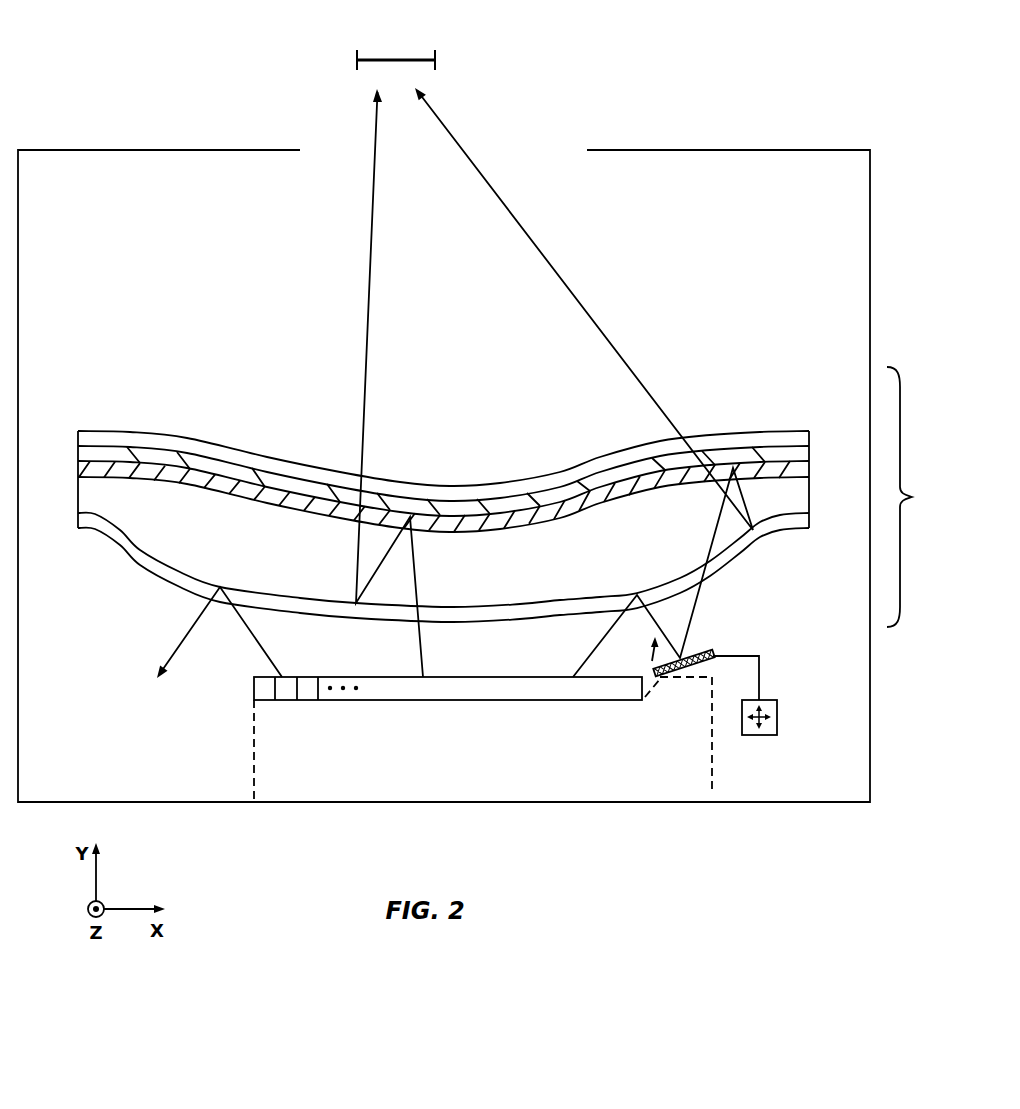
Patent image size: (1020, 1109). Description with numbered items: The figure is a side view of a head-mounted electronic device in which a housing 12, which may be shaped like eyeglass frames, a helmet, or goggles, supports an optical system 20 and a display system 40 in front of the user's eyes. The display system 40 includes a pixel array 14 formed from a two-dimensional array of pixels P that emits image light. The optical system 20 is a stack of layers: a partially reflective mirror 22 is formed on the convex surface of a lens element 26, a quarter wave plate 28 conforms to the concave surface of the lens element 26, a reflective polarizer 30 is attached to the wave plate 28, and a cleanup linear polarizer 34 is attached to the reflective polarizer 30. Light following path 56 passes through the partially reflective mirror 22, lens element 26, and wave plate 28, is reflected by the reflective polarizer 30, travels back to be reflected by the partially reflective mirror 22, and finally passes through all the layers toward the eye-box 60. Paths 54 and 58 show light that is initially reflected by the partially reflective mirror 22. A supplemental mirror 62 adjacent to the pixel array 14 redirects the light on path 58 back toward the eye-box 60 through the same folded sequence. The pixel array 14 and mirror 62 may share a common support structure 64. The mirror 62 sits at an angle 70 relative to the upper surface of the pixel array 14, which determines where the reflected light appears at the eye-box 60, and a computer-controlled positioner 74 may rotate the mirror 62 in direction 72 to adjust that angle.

The housing 12 is at (733, 150).
The pixel array 14 is at (546, 700).
The optical system 20 is at (484, 497).
The partially reflective mirror 22 is at (140, 550).
The lens element 26 is at (87, 494).
The wave plate 28 is at (78, 471).
The reflective polarizer 30 is at (78, 453).
The polarizer 34 is at (78, 436).
The display system 40 is at (243, 669).
The pixels P is at (266, 700).
The path 54 is at (185, 636).
The path 56 is at (368, 370).
The path 58 is at (700, 603).
The eye-box 60 is at (401, 59).
The supplemental mirror 62 is at (713, 654).
The common support structure 64 is at (712, 756).
The angle 70 is at (692, 671).
The direction 72 is at (652, 650).
The computer-controlled positioner 74 is at (779, 712).